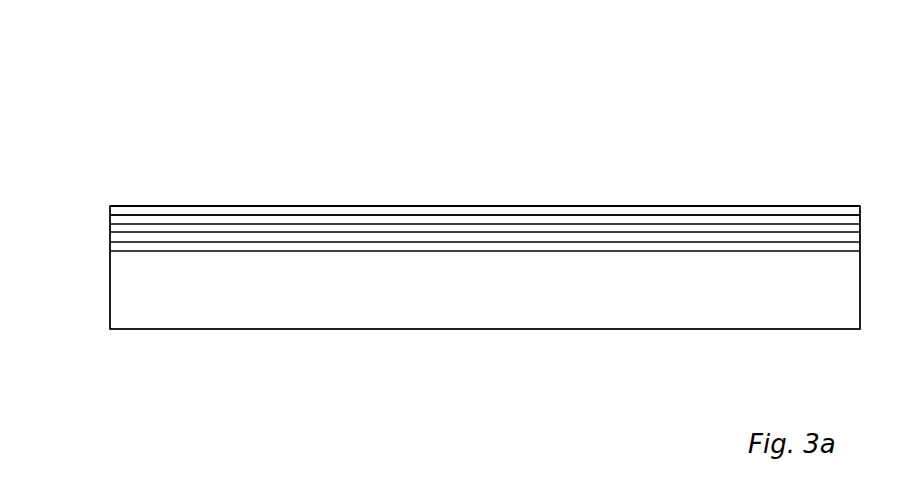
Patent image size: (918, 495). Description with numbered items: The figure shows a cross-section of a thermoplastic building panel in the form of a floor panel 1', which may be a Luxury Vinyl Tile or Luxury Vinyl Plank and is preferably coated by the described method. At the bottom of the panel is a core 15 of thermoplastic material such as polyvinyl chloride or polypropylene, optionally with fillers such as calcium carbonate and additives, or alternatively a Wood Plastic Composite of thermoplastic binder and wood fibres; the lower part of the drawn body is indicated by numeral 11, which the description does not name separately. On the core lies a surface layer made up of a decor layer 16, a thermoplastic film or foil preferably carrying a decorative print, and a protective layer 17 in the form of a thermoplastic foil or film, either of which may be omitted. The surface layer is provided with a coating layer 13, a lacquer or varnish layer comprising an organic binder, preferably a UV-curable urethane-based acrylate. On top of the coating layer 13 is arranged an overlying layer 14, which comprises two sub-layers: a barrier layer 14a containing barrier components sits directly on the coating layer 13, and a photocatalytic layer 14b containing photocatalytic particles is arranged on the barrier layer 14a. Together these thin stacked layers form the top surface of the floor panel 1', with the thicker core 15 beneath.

The floor panel 1' is at (445, 167).
The substrate 11 is at (623, 252).
The coating layer 13 is at (515, 228).
The overlying layer 14 is at (267, 210).
The barrier layer 14a is at (413, 223).
The photocatalytic layer 14b is at (343, 210).
The core 15 is at (415, 297).
The decor layer 16 is at (730, 245).
The protective layer 17 is at (620, 258).